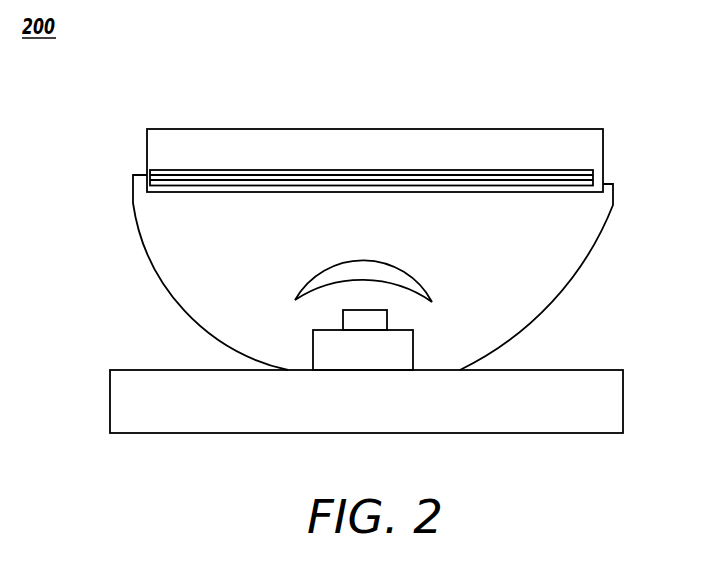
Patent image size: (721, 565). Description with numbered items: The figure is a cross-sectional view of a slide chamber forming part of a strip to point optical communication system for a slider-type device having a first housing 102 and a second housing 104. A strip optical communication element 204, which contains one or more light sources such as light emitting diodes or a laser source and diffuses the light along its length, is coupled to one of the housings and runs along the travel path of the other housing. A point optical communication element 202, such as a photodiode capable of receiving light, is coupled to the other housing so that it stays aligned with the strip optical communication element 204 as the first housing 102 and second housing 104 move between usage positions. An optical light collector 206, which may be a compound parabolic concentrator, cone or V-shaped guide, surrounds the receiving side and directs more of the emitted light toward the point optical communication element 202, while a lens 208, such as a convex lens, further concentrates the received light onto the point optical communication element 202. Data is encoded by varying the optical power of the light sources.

The first housing 102 is at (605, 148).
The second housing 104 is at (612, 403).
The point optical communication element 202 is at (417, 347).
The strip optical communication element 204 is at (363, 169).
The optical light collector 206 is at (608, 233).
The lens 208 is at (363, 258).